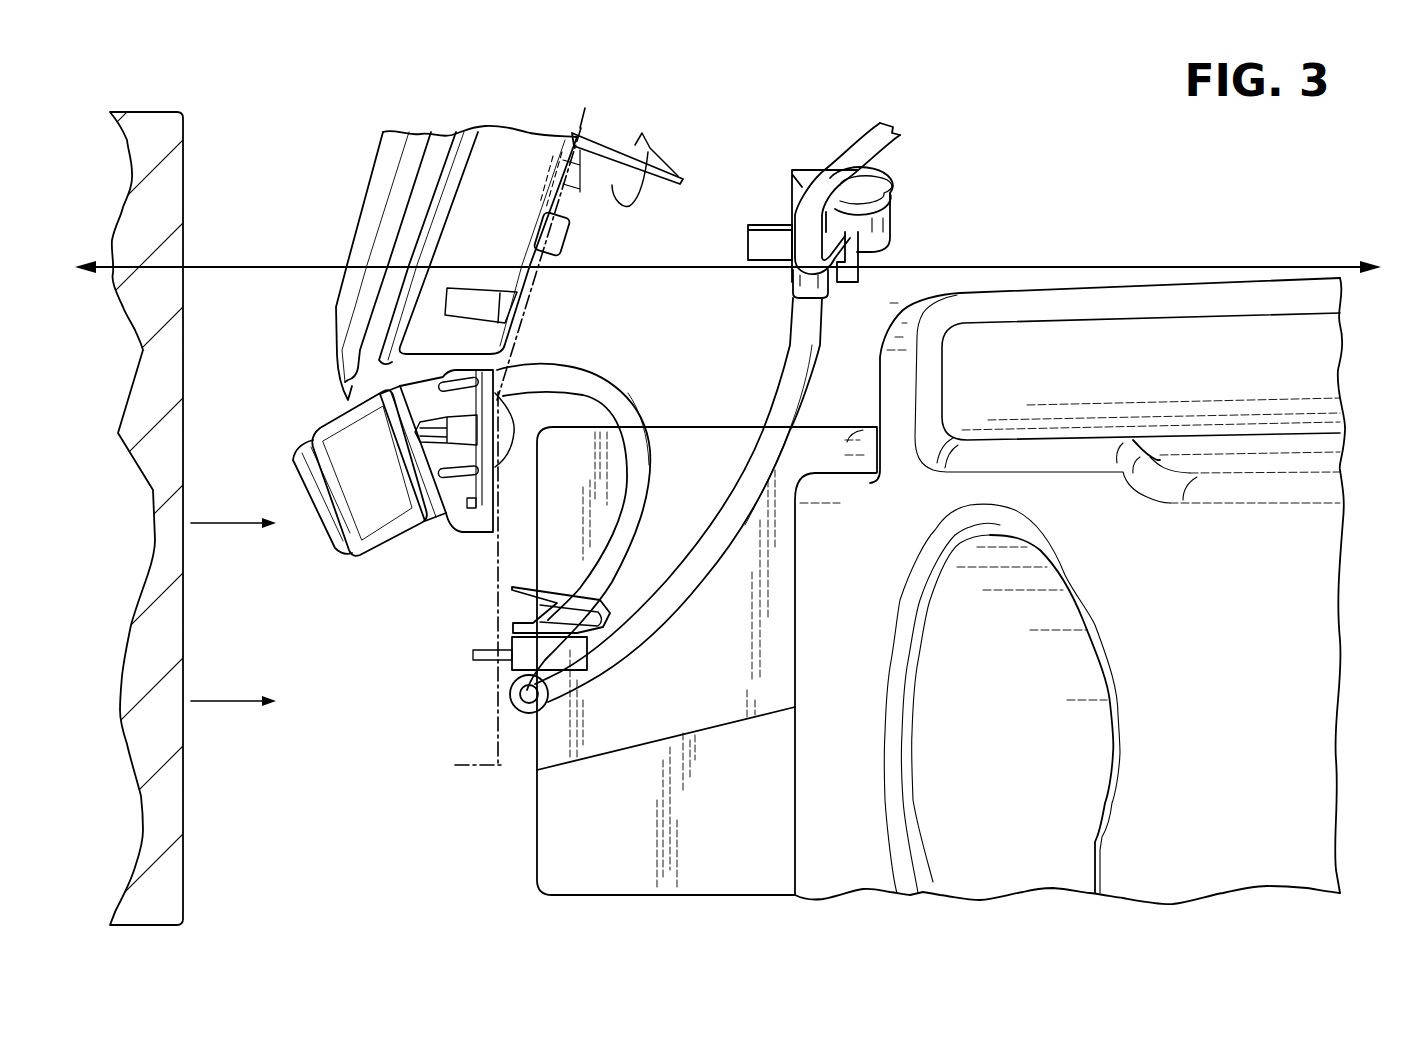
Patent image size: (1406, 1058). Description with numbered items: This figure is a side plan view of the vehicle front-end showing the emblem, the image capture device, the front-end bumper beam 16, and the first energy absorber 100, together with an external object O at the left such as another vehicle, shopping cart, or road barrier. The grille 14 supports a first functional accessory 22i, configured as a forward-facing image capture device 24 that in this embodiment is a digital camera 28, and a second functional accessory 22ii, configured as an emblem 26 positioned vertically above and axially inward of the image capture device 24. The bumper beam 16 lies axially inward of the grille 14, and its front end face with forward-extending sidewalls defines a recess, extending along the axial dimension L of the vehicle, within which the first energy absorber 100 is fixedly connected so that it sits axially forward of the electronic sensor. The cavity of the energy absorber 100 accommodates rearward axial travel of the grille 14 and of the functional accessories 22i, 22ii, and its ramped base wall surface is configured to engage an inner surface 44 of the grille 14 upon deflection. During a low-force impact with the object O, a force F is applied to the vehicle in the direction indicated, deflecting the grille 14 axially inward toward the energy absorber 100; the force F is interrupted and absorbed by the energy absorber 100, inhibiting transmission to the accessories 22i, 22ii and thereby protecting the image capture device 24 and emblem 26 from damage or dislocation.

The first energy absorber 100 is at (585, 915).
The grille 14 is at (462, 828).
The front-end bumper beam 16 is at (1308, 610).
The first functional accessory 22i is at (305, 584).
The second functional accessory 22ii is at (493, 105).
The image capture device 24 is at (292, 539).
The emblem 26 is at (360, 188).
The digital camera 28 is at (347, 450).
The inner surface 44 is at (498, 732).
The external object O is at (160, 112).
The axial dimension L is at (1197, 267).
The force F is at (233, 615).